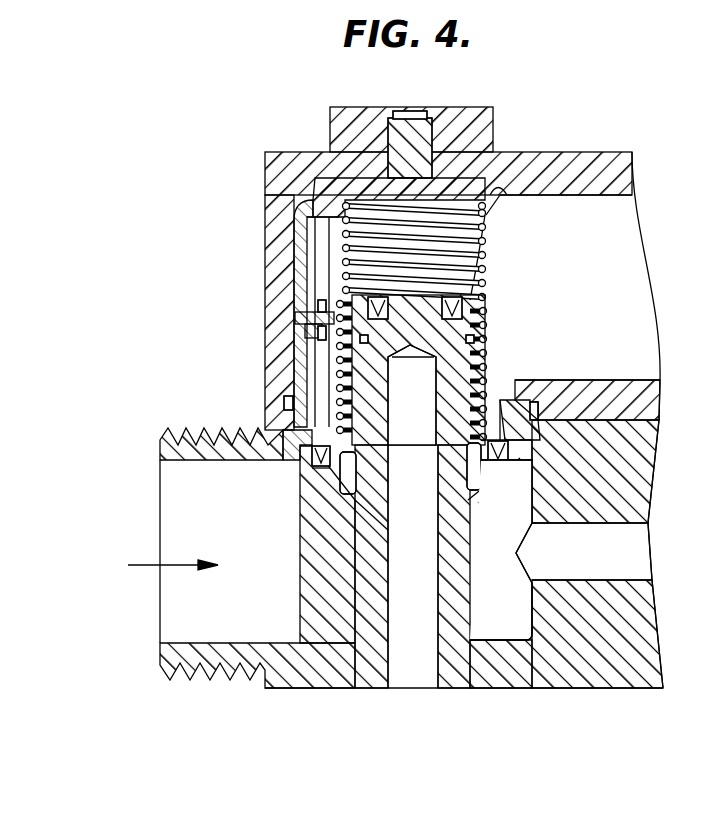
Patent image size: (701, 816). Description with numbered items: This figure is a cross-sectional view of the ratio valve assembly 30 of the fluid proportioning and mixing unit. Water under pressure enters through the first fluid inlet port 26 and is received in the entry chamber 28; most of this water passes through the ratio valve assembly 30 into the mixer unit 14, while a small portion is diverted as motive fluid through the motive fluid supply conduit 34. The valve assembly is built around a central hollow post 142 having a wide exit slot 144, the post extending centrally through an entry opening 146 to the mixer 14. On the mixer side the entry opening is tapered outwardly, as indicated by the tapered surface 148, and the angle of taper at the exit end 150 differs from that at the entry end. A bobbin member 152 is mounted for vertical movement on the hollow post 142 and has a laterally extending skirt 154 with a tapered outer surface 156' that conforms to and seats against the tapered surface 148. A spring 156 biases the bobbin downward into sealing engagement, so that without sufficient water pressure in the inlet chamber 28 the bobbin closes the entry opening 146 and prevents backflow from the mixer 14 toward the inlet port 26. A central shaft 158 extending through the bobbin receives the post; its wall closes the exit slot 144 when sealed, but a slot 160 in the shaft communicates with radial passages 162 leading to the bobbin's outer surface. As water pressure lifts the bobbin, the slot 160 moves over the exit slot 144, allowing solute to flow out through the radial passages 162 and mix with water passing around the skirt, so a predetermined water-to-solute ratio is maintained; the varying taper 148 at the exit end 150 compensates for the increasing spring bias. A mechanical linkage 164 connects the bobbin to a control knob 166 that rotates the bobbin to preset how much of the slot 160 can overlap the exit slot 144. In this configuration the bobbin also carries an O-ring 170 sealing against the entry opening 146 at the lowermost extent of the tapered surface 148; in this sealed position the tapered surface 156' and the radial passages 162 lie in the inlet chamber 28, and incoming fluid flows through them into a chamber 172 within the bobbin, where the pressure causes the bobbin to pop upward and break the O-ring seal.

The mixer unit 14 is at (590, 289).
The first fluid inlet port 26 is at (165, 628).
The entry chamber 28 is at (522, 645).
The ratio valve assembly 30 is at (534, 136).
The motive fluid supply conduit 34 is at (628, 582).
The hollow post 142 is at (398, 668).
The exit slot 144 is at (388, 384).
The entry opening 146 is at (312, 462).
The tapered surface 148 is at (536, 452).
The exit end 150 is at (518, 380).
The bobbin member 152 is at (335, 490).
The skirt 154 is at (508, 410).
The spring 156 is at (438, 322).
The tapered outer surface 156' is at (501, 550).
The central shaft 158 is at (370, 572).
The slot 160 is at (370, 473).
The radial passages 162 is at (318, 468).
The mechanical linkage 164 is at (298, 245).
The control knob 166 is at (468, 110).
The O-ring 170 is at (298, 433).
The chamber 172 is at (460, 475).